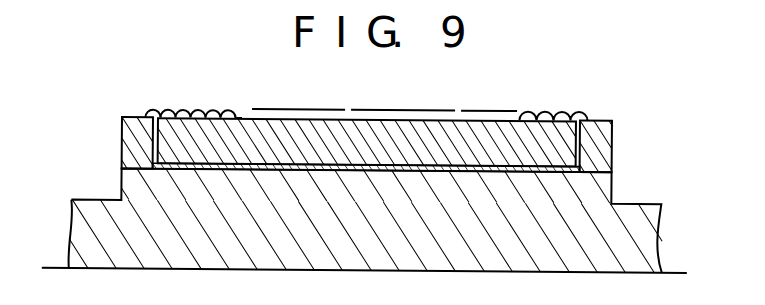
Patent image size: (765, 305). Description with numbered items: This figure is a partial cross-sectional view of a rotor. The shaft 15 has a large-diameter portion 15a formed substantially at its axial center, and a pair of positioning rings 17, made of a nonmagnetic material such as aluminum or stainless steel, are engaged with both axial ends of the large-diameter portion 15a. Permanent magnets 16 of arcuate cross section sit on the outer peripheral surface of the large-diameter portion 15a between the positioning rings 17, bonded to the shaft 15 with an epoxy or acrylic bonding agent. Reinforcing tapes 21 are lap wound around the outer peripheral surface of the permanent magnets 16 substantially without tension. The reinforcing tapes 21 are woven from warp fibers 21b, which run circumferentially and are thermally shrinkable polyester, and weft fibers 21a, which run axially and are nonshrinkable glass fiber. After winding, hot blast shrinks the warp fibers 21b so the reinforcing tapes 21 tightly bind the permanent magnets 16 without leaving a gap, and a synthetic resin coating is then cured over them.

The shaft 15 is at (648, 199).
The large-diameter portion 15a is at (136, 167).
The permanent magnets 16 is at (472, 129).
The positioning rings 17 is at (131, 143).
The reinforcing tapes 21 is at (373, 93).
The weft fibers 21a is at (208, 111).
The warp fibers 21b is at (151, 111).